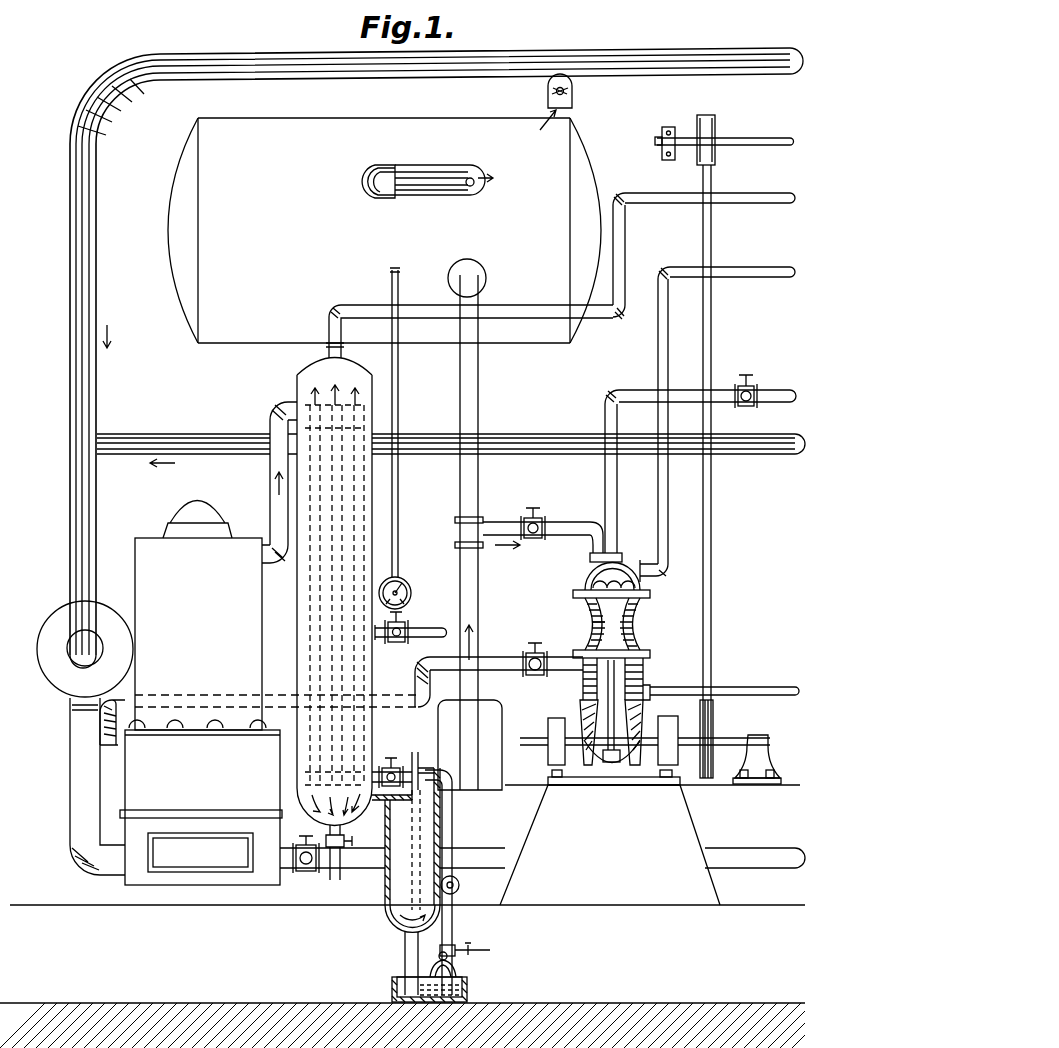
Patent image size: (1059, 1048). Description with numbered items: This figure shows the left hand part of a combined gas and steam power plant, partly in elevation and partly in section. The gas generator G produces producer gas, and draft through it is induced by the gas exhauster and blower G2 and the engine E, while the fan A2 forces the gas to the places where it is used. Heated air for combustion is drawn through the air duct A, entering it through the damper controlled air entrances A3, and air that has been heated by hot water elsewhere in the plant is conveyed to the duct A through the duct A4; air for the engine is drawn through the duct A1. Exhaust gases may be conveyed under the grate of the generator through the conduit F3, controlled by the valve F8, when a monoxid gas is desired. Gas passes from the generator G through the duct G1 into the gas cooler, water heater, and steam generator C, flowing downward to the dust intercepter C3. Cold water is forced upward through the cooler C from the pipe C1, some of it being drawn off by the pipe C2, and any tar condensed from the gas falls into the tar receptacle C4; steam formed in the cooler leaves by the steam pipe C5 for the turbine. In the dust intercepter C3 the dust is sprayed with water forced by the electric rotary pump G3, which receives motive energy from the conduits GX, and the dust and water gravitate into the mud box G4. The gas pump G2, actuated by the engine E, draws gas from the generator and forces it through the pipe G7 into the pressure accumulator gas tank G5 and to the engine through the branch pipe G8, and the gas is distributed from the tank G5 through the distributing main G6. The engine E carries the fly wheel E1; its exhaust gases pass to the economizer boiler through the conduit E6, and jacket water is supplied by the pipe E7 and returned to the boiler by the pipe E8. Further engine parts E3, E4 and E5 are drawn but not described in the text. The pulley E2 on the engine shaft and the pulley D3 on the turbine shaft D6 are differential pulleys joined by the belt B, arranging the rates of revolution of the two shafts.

The air duct A is at (505, 62).
The duct A1 is at (108, 725).
The fan A2 is at (70, 665).
The damper controlled air entrances A3 is at (568, 93).
The duct A4 is at (150, 436).
The belt B is at (712, 575).
The gas cooler, water heater, and steam generator C is at (320, 565).
The pipe C1 is at (396, 766).
The pipe C2 is at (425, 636).
The dust intercepter C3 is at (395, 888).
The tar receptacle C4 is at (330, 810).
The steam pipe C5 is at (760, 200).
The pulley D3 is at (718, 100).
The shaft D6 is at (760, 136).
The internal combustion engine E is at (592, 628).
The fly wheel E1 is at (668, 768).
The pulley E2 is at (715, 730).
The pump cylinder E3 is at (583, 686).
The pump casing E4 is at (628, 606).
The pump dome E5 is at (588, 578).
The conduit E6 is at (748, 274).
The pipe E7 is at (740, 688).
The pipe E8 is at (768, 388).
The conduit F3 is at (350, 862).
The valve F8 is at (306, 875).
The gas generator G is at (201, 693).
The duct G1 is at (272, 498).
The gas exhauster and blower G2 is at (475, 762).
The electric rotary pump G3 is at (458, 890).
The mud box G4 is at (392, 992).
The pressure accumulator gas tank G5 is at (384, 230).
The distributing main G6 is at (440, 176).
The pipe G7 is at (458, 490).
The branch pipe G8 is at (548, 522).
The conduits GX is at (505, 855).